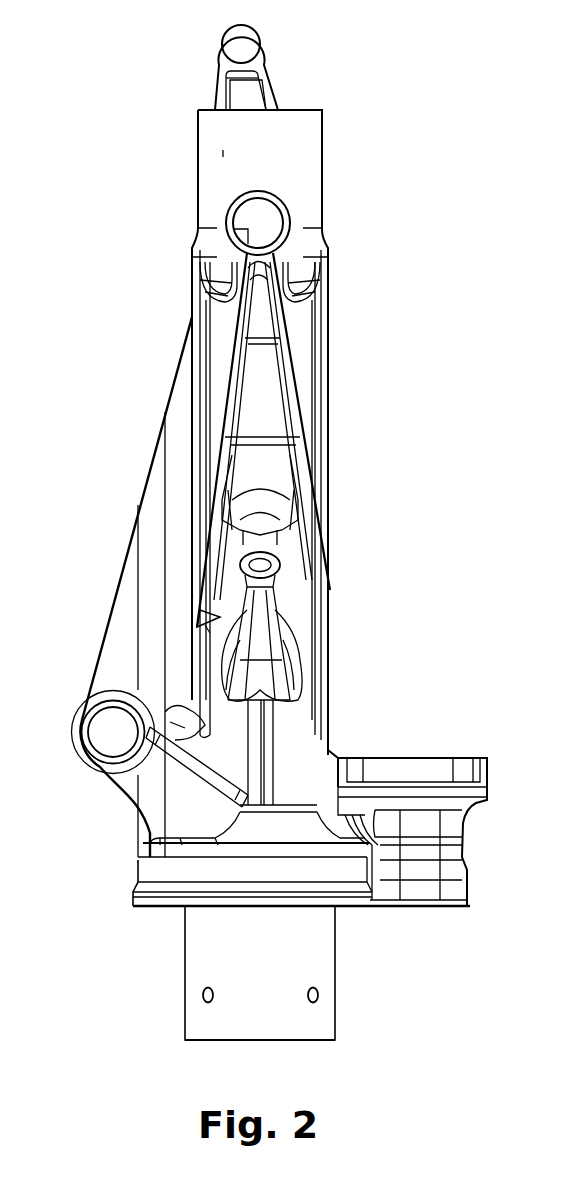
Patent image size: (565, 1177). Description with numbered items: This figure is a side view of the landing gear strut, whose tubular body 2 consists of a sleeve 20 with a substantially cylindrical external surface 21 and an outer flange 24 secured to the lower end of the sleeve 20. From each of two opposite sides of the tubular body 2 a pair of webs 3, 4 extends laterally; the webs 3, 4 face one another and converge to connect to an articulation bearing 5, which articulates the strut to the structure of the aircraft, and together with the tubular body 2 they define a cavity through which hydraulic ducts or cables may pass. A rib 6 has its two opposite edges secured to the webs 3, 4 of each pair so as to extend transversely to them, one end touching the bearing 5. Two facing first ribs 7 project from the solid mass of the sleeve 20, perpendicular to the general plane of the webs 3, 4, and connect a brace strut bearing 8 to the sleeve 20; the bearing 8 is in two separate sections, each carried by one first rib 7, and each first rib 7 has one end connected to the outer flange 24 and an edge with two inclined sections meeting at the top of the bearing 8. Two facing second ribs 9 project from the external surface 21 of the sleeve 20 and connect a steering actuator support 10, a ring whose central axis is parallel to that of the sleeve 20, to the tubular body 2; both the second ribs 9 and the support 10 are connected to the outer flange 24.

The tubular body 2 is at (347, 112).
The web 3 is at (237, 407).
The web 4 is at (283, 358).
The articulation bearing 5 is at (270, 198).
The rib 6 is at (258, 408).
The first rib 7 is at (110, 655).
The brace strut bearing 8 is at (83, 748).
The second rib 9 is at (323, 770).
The steering actuator support 10 is at (438, 765).
The sleeve 20 is at (297, 148).
The external surface 21 is at (223, 146).
The outer flange 24 is at (145, 872).